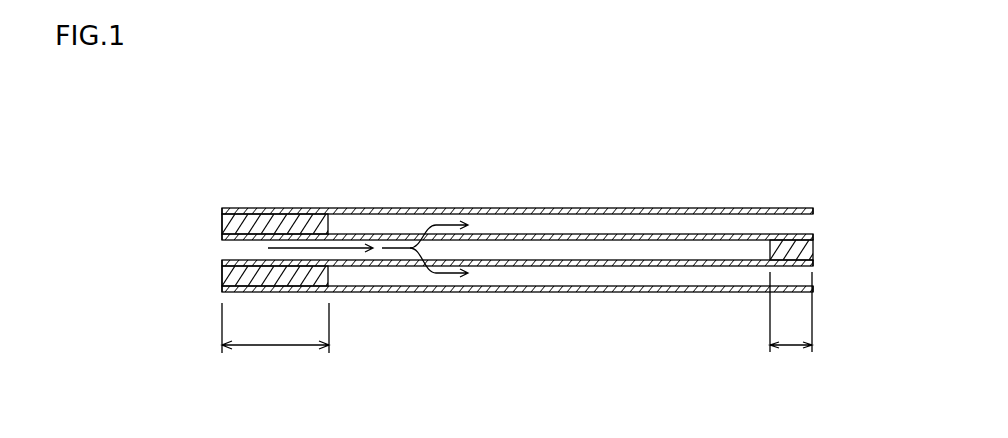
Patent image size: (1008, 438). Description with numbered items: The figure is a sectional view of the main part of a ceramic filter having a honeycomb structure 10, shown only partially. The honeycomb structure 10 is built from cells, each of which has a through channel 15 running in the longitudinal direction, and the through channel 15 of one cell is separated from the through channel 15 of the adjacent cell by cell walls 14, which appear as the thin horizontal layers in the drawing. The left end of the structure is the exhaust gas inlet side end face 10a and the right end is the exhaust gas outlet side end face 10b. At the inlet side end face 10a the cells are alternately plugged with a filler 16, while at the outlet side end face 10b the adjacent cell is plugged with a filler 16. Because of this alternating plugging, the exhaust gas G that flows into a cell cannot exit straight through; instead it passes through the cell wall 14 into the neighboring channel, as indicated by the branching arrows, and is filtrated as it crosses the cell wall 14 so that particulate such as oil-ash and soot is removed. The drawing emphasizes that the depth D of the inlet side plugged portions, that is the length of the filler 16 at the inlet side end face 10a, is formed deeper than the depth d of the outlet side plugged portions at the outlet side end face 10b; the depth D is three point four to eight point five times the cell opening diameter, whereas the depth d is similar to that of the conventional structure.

The honeycomb structure 10 is at (521, 229).
The exhaust gas inlet side end face 10a is at (222, 207).
The exhaust gas outlet side end face 10b is at (815, 209).
The cell wall 14 is at (517, 233).
The through channel 15 is at (233, 250).
The filler 16 is at (250, 212).
The exhaust gas G is at (343, 254).
The depth of the inlet side plugged portions D is at (275, 340).
The depth of the outlet side plugged portions d is at (791, 328).